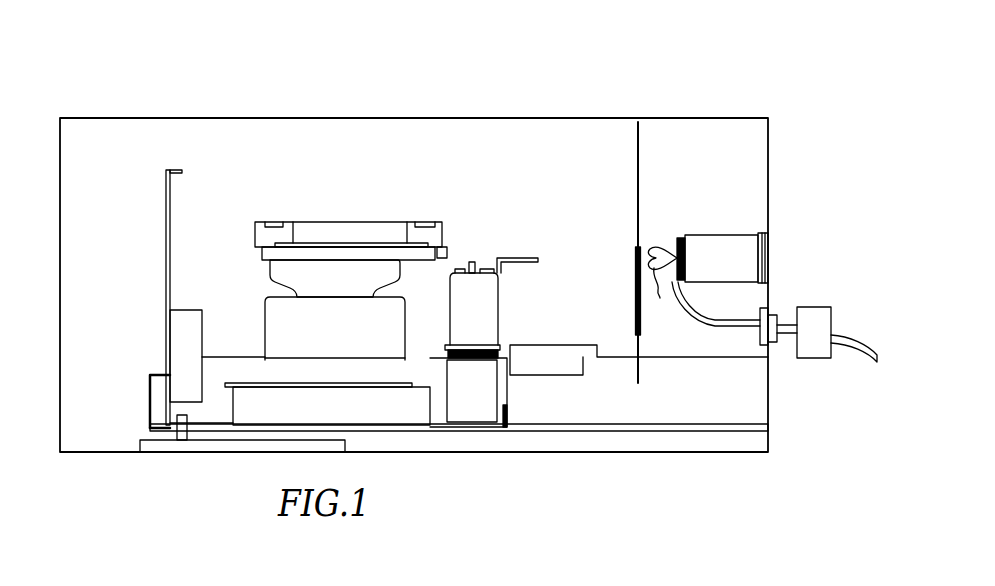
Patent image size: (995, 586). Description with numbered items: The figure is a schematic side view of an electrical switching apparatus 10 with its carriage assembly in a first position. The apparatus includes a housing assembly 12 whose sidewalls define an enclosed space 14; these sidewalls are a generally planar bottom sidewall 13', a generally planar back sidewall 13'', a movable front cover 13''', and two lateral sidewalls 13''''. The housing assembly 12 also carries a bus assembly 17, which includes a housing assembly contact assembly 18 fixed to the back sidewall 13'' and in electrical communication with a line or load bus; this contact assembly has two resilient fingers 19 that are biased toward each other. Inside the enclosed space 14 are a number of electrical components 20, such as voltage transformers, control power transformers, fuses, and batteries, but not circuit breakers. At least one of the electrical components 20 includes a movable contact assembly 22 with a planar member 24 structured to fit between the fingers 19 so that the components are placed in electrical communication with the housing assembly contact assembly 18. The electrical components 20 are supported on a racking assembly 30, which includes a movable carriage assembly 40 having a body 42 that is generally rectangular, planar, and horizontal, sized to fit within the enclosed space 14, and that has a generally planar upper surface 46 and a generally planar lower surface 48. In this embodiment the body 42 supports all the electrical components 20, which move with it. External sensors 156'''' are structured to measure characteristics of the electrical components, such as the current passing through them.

The electrical switching apparatus 10 is at (132, 70).
The housing assembly 12 is at (355, 118).
The bottom sidewall 13' is at (609, 479).
The back sidewall 13'' is at (798, 136).
The movable front cover 13''' is at (56, 113).
The lateral sidewalls 13'''' is at (240, 91).
The enclosed space 14 is at (540, 142).
The bus assembly 17 is at (790, 252).
The housing assembly contact assembly 18 is at (671, 192).
The resilient fingers 19 is at (662, 290).
The electrical components 20 is at (290, 192).
The movable contact assembly 22 is at (504, 200).
The planar member 24 is at (518, 258).
The racking assembly 30 is at (246, 447).
The carriage assembly 40 is at (167, 218).
The carriage assembly body 42 is at (427, 430).
The upper surface 46 is at (205, 420).
The lower surface 48 is at (470, 433).
The external sensors 156'''' is at (774, 350).